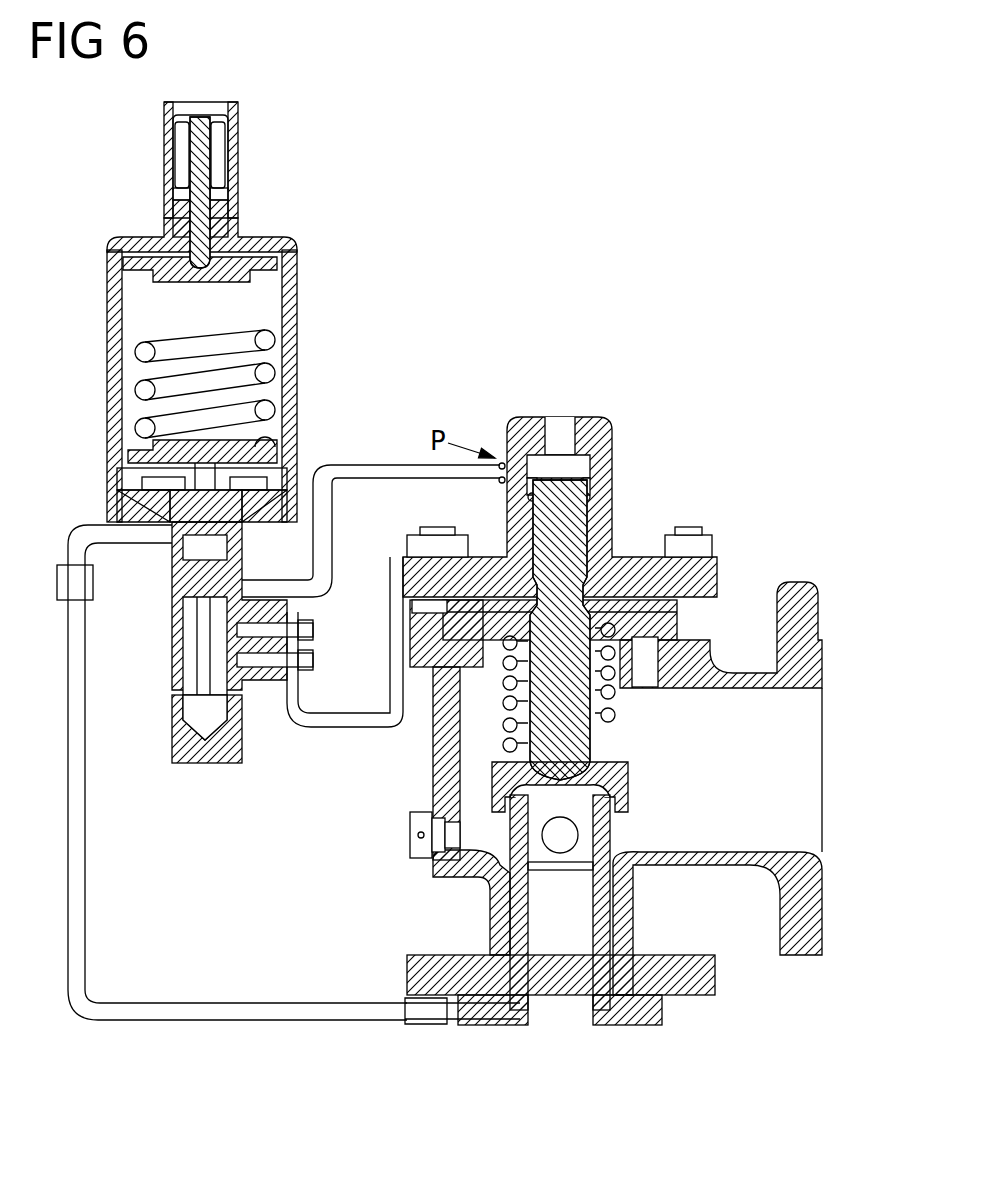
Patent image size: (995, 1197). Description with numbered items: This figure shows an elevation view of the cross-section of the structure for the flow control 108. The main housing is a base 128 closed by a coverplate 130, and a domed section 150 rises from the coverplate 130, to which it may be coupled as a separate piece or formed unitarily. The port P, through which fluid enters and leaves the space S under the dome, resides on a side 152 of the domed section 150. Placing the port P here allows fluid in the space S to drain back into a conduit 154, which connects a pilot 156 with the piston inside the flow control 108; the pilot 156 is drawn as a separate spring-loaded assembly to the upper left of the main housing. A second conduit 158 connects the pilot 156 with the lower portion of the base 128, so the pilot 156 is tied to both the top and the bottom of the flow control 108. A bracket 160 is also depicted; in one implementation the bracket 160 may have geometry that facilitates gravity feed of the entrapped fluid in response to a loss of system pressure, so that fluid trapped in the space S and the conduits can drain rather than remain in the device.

The flow control 108 is at (705, 315).
The base 128 is at (800, 595).
The coverplate 130 is at (700, 580).
The domed section 150 is at (628, 460).
The side 152 is at (505, 450).
The conduit 154 is at (377, 473).
The pilot 156 is at (255, 248).
The conduit 158 is at (267, 1020).
The bracket 160 is at (340, 728).